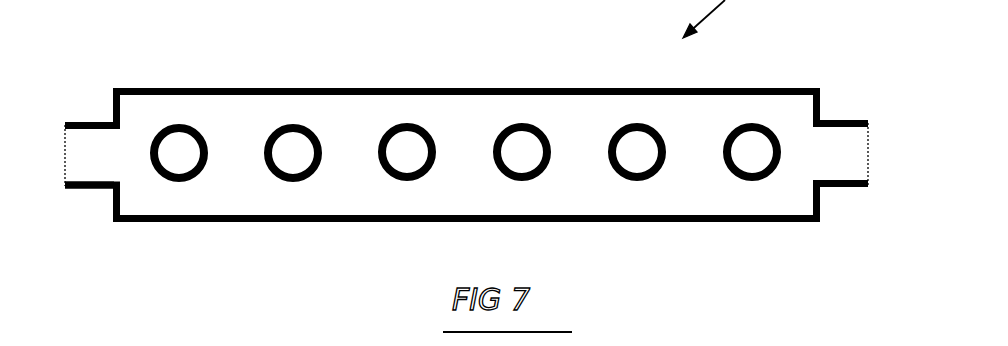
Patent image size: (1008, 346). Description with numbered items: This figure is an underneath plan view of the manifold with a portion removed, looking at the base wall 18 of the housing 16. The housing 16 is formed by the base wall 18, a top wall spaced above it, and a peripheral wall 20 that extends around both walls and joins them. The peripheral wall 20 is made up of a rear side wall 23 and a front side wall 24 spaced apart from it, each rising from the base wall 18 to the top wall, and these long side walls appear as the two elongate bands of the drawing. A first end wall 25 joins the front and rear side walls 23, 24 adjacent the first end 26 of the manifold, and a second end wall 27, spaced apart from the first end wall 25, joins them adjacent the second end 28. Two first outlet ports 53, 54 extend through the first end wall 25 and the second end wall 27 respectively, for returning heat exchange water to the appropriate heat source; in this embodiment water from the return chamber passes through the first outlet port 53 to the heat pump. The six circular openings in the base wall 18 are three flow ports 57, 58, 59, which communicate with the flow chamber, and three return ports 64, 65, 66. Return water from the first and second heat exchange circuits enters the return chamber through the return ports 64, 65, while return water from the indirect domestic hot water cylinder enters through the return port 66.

The housing 16 is at (163, 225).
The base wall 18 is at (255, 195).
The peripheral wall 20 is at (295, 88).
The rear side wall 23 is at (423, 90).
The front side wall 24 is at (418, 222).
The first end wall 25 is at (110, 203).
The first end 26 is at (110, 102).
The second end wall 27 is at (822, 198).
The second end 28 is at (819, 100).
The first outlet port 53 is at (80, 180).
The first outlet port 54 is at (842, 175).
The flow port 57 is at (187, 180).
The flow port 58 is at (395, 180).
The flow port 59 is at (632, 180).
The return port 64 is at (297, 182).
The return port 65 is at (538, 178).
The return port 66 is at (752, 180).